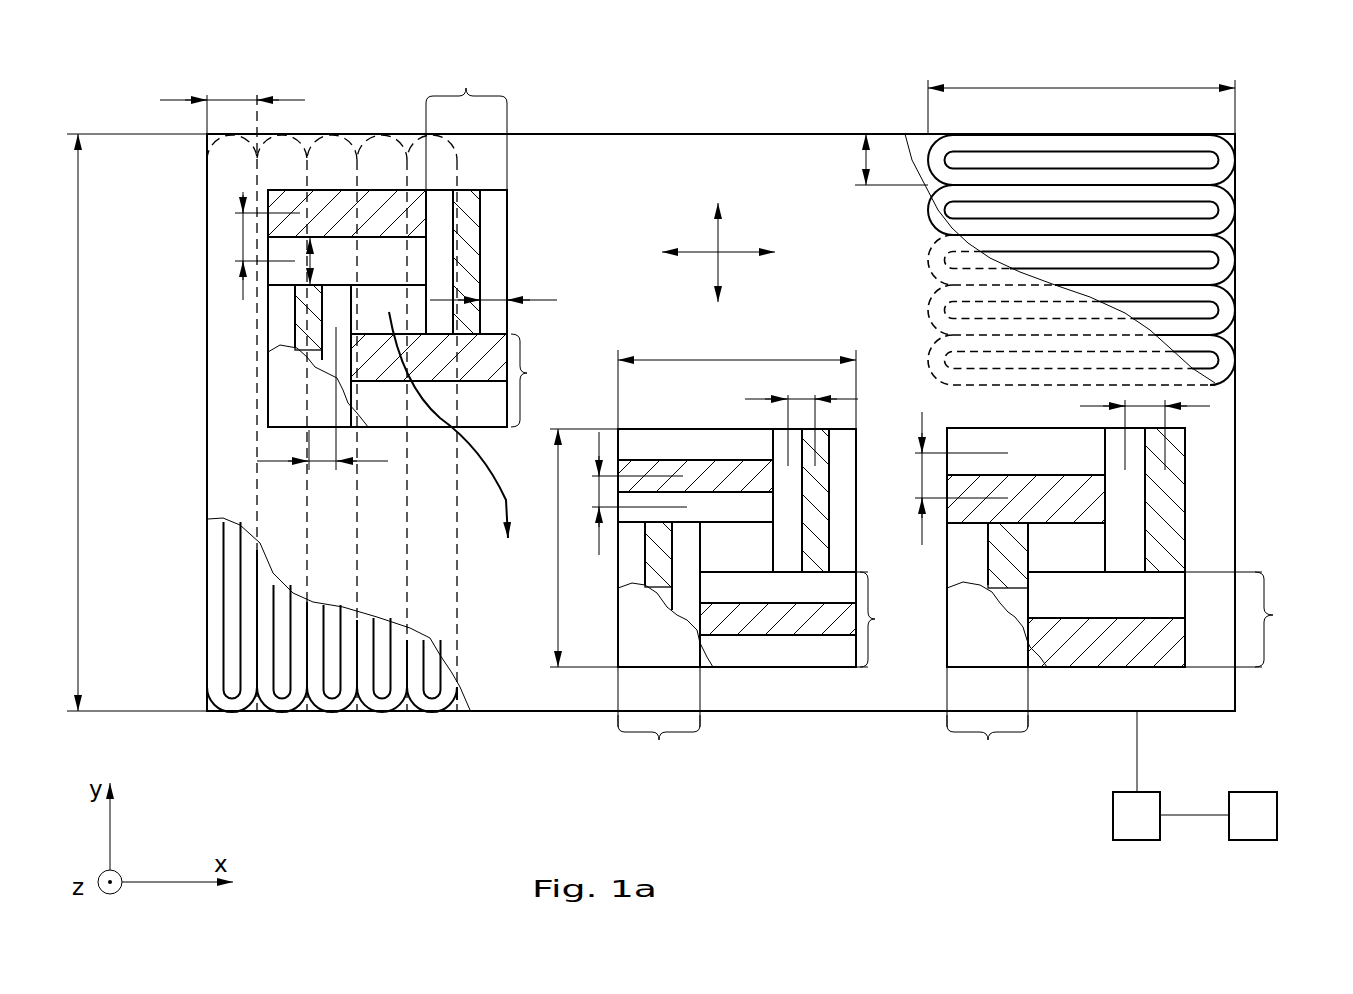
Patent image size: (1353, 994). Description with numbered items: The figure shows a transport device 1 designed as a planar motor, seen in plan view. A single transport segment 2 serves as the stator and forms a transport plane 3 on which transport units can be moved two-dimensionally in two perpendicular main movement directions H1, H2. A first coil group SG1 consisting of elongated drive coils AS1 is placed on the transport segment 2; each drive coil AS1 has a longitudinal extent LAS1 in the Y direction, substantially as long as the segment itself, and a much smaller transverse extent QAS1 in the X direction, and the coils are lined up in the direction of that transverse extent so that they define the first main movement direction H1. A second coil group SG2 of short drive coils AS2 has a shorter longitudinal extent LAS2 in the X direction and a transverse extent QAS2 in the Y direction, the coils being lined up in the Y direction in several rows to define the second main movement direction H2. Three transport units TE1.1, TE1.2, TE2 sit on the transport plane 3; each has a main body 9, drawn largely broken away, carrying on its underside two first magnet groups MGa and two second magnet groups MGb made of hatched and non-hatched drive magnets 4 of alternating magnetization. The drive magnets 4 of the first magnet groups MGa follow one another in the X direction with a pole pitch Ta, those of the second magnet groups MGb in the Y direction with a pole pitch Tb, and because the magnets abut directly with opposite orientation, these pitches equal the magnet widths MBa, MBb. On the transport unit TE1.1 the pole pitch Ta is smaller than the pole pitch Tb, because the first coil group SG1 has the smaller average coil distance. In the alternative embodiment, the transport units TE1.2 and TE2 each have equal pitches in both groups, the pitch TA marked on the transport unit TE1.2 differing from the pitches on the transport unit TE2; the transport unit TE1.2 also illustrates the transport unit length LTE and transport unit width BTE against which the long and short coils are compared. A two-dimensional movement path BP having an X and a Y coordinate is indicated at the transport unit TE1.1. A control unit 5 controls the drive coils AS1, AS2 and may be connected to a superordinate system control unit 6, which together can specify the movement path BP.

The transport device 1 is at (155, 112).
The transport segment 2 is at (650, 182).
The transport plane 3 is at (345, 546).
The drive magnets 4 is at (401, 260).
The control unit 5 is at (1148, 838).
The system control unit 6 is at (1264, 838).
The main body 9 is at (295, 404).
The transport unit TE1.1 is at (332, 299).
The transport unit TE1.2 is at (787, 677).
The transport unit TE2 is at (1190, 523).
The first coil group SG1 is at (294, 651).
The second coil group SG2 is at (1123, 228).
The drive coils AS1 is at (187, 635).
The drive coils AS2 is at (1119, 128).
The first magnet group MGa is at (727, 416).
The second magnet group MGb is at (927, 500).
The magnet width MBa is at (505, 282).
The magnet width MBb is at (339, 261).
The pole pitch Ta is at (733, 398).
The pole pitch TA is at (801, 417).
The pole pitch Tb is at (609, 373).
The transport unit length LTE is at (737, 380).
The transport unit width BTE is at (564, 548).
The longitudinal extent LAS1 is at (95, 422).
The longitudinal extent LAS2 is at (1081, 95).
The transverse extent QAS1 is at (232, 101).
The transverse extent QAS2 is at (860, 159).
The first main movement direction H1 is at (719, 268).
The second main movement direction H2 is at (738, 247).
The movement path BP is at (492, 468).